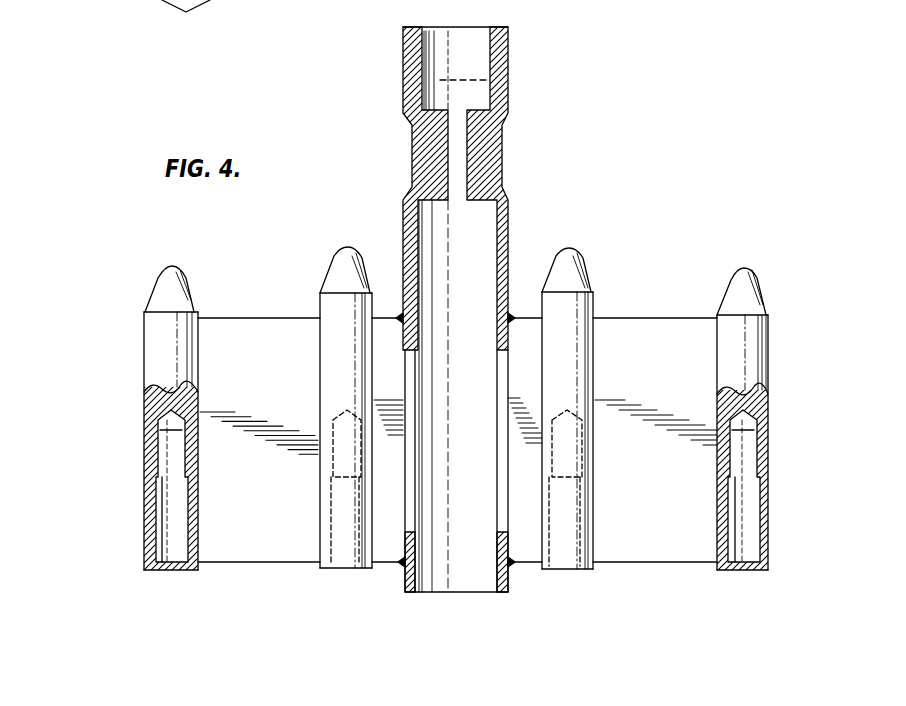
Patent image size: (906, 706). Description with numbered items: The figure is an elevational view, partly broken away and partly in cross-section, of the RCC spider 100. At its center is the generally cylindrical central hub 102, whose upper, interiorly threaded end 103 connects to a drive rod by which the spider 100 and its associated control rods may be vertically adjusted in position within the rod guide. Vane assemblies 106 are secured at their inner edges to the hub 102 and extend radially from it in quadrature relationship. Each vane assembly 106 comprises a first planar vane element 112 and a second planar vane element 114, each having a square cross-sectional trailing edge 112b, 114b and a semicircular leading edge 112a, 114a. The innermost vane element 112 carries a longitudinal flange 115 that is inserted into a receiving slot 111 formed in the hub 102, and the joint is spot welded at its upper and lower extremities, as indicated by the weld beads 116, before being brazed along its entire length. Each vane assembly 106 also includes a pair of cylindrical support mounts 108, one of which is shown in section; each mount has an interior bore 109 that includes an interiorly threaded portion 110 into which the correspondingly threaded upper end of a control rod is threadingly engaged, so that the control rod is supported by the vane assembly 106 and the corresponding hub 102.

The RCC spider 100 is at (611, 174).
The central hub 102 is at (405, 183).
The interiorly threaded end 103 is at (422, 45).
The vane assembly 106 is at (267, 302).
The cylindrical support mount 108 is at (574, 253).
The interior bore 109 is at (174, 572).
The interiorly threaded portion 110 is at (160, 448).
The receiving slot 111 is at (493, 365).
The first planar vane element 112 is at (398, 386).
The semicircular leading edge 112a is at (366, 568).
The square cross-sectional trailing edge 112b is at (385, 318).
The second planar vane element 114 is at (232, 383).
The semicircular leading edge 114a is at (275, 563).
The square cross-sectional trailing edge 114b is at (290, 318).
The flange 115 is at (497, 503).
The weld bead 116 is at (510, 318).